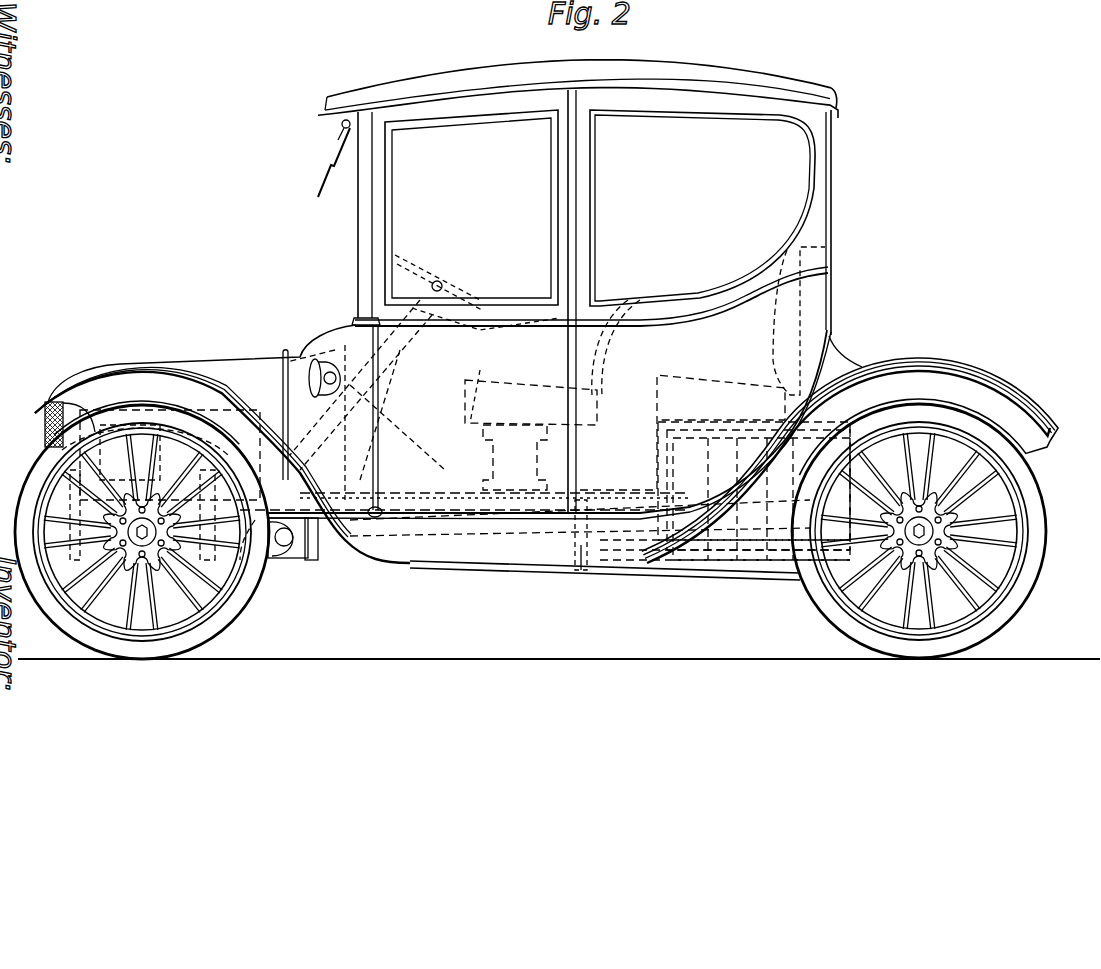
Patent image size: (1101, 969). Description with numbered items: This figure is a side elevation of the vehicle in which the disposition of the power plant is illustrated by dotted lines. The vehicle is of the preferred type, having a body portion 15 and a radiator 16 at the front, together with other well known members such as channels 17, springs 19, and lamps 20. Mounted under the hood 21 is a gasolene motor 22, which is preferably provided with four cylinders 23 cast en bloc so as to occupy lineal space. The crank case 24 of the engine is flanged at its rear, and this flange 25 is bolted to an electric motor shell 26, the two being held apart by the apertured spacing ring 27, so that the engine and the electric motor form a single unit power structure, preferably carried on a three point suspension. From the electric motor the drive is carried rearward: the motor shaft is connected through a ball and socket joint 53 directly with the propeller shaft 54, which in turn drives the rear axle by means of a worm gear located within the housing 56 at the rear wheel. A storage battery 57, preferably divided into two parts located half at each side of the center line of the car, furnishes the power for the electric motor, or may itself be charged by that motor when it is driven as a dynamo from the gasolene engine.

The body portion 15 is at (787, 340).
The radiator 16 is at (48, 425).
The channels 17 is at (334, 158).
The springs 19 is at (68, 556).
The lamps 20 is at (322, 362).
The hood 21 is at (318, 560).
The gasolene motor 22 is at (225, 437).
The cylinders 23 is at (150, 415).
The crank case 24 is at (68, 555).
The flange 25 is at (214, 555).
The electric motor shell 26 is at (290, 560).
The apertured spacing ring 27 is at (262, 575).
The ball and socket joint 53 is at (380, 460).
The propeller shaft 54 is at (578, 556).
The housing 56 is at (960, 517).
The storage battery 57 is at (725, 445).